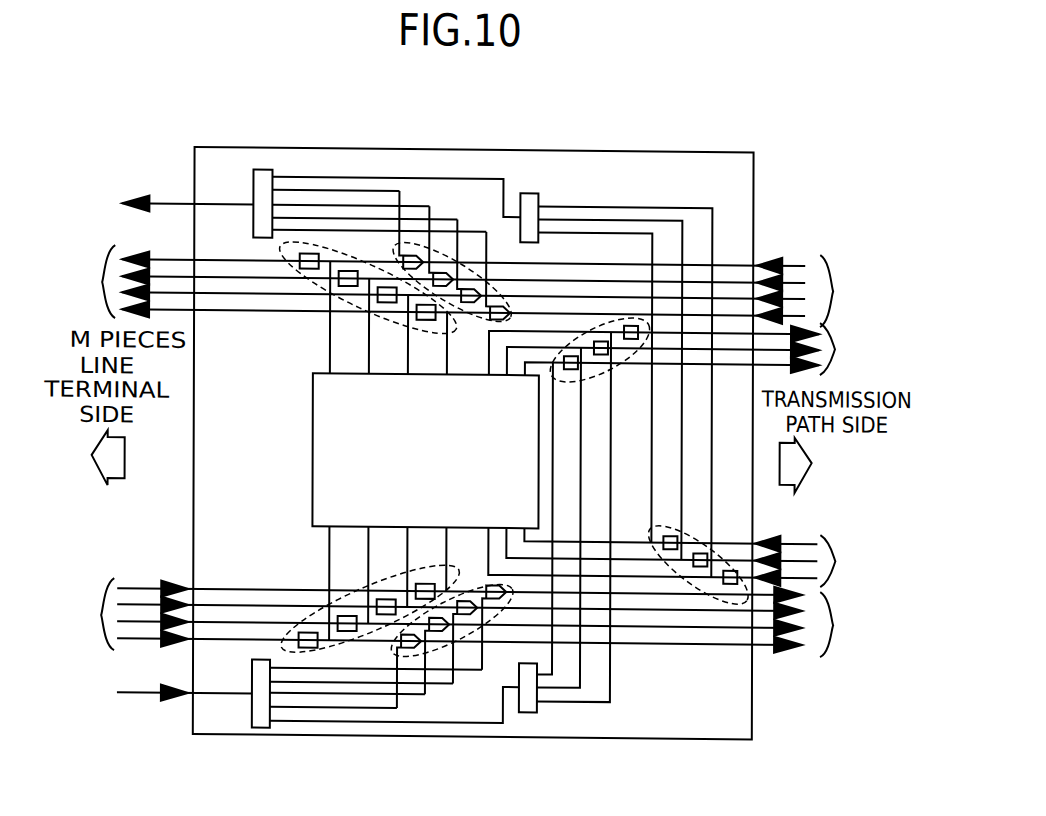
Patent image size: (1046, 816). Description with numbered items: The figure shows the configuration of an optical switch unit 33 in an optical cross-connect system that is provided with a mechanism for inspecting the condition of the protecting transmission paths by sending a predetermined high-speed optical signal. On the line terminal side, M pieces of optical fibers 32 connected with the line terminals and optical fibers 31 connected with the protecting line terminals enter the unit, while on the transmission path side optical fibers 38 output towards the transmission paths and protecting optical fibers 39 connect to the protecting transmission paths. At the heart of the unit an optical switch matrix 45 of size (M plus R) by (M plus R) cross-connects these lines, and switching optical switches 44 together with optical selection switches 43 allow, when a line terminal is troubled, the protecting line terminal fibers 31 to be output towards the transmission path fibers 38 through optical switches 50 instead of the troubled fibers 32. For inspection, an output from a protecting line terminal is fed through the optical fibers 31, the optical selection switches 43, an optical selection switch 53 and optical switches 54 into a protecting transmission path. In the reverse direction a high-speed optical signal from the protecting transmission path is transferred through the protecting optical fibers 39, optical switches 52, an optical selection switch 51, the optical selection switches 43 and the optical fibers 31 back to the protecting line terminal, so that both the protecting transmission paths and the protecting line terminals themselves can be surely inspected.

The optical fibers 31 is at (167, 198).
The optical fibers 32 is at (101, 284).
The optical switch unit 33 is at (708, 143).
The optical fibers 38 is at (836, 282).
The protecting optical fibers 39 is at (837, 342).
The optical selection switches 43 is at (263, 164).
The switching optical switches 44 is at (319, 244).
The optical switch matrix 45 is at (314, 449).
The optical switches 50 is at (471, 245).
The optical selection switch 51 is at (539, 195).
The optical switches 52 is at (694, 576).
The optical selection switch 53 is at (539, 700).
The optical switches 54 is at (626, 371).